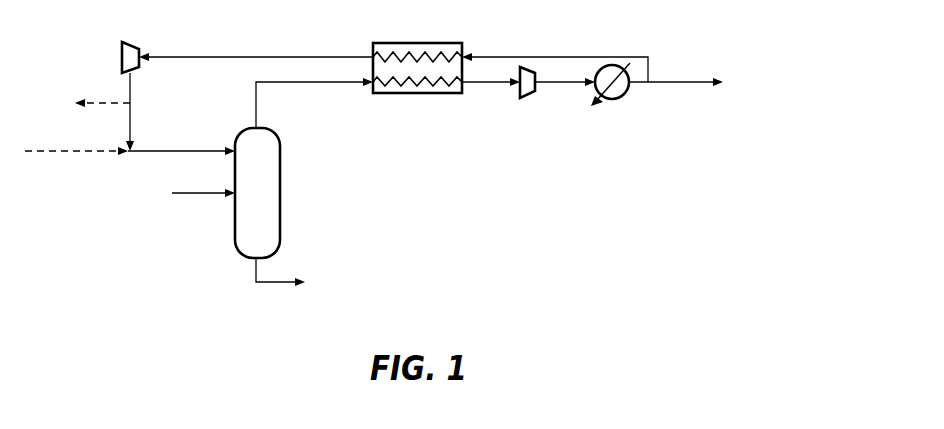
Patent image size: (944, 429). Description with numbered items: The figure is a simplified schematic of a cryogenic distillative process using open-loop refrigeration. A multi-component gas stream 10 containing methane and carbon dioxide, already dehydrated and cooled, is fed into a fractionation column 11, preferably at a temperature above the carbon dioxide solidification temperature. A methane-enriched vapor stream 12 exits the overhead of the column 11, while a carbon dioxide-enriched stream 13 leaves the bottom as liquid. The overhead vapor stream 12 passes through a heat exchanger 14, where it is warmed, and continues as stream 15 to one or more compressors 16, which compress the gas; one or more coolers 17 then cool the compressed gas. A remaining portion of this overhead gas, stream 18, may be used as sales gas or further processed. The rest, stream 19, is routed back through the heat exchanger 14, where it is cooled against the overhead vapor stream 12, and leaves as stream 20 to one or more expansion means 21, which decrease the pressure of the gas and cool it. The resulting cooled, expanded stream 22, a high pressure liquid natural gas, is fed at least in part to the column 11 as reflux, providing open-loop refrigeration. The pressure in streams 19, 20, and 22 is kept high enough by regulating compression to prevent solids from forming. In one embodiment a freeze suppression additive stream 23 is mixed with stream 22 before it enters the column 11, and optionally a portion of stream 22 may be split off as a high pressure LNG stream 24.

The multi-component gas stream 10 is at (203, 194).
The fractionation column 11 is at (267, 193).
The methane-enriched vapor stream 12 is at (257, 100).
The carbon dioxide-enriched stream 13 is at (278, 283).
The heat exchanger 14 is at (420, 43).
The warmed gas line 15 is at (484, 84).
The compressor 16 is at (528, 99).
The cooler 17 is at (625, 98).
The sales gas stream 18 is at (665, 82).
The cooled compressed gas stream 19 is at (557, 57).
The gas stream to expansion means 20 is at (256, 57).
The expansion means 21 is at (128, 42).
The cooled expanded stream 22 is at (131, 122).
The freeze suppression additive stream 23 is at (78, 152).
The high pressure LNG stream 24 is at (108, 101).